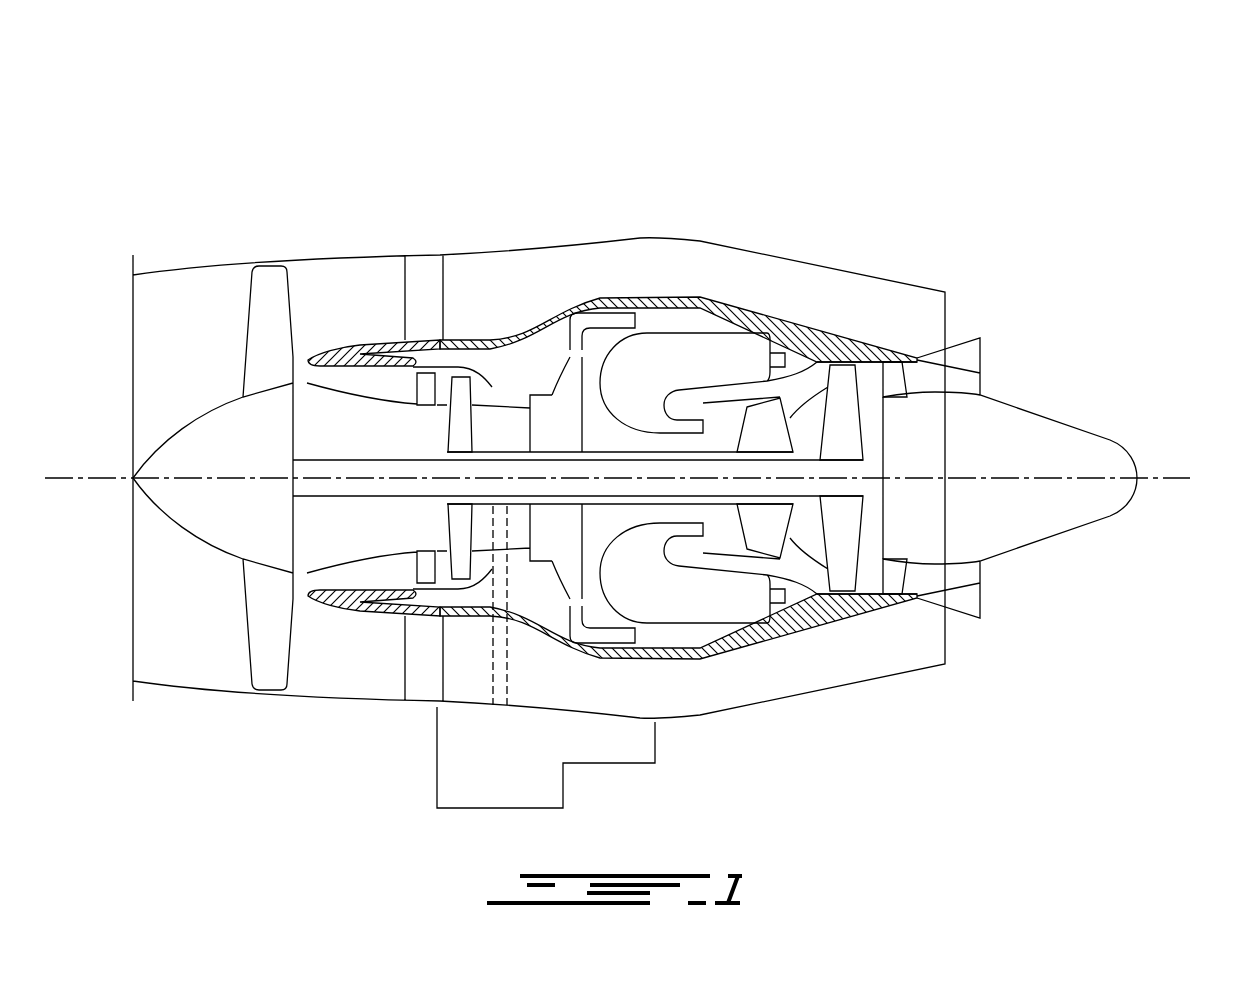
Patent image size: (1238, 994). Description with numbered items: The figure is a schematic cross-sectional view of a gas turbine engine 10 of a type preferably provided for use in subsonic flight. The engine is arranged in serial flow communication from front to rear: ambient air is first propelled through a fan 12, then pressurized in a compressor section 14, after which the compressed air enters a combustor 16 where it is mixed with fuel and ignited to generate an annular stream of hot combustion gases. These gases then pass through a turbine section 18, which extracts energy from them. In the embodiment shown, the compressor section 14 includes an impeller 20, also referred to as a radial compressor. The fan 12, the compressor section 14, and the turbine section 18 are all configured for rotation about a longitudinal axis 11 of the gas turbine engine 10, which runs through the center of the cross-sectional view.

The gas turbine engine 10 is at (855, 141).
The longitudinal axis 11 is at (1170, 478).
The fan 12 is at (265, 617).
The compressor section 14 is at (493, 387).
The combustor 16 is at (680, 360).
The turbine section 18 is at (802, 538).
The impeller 20 is at (556, 402).